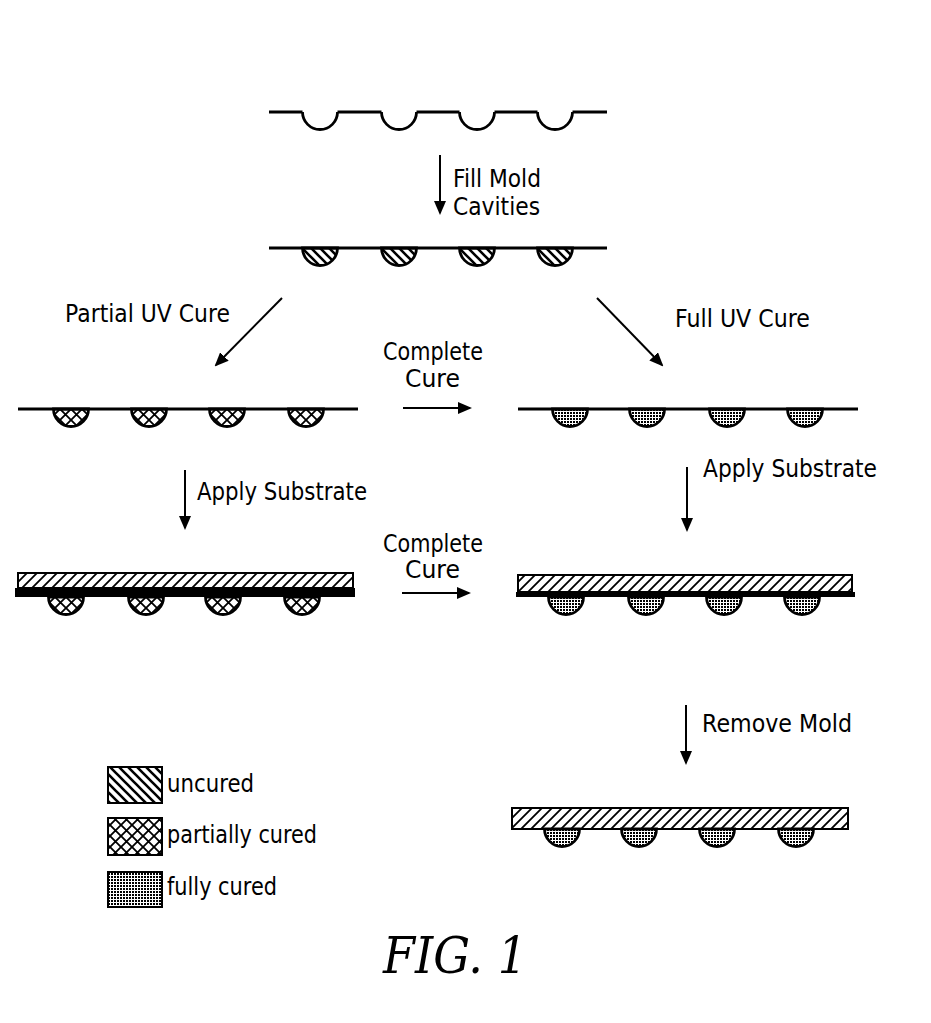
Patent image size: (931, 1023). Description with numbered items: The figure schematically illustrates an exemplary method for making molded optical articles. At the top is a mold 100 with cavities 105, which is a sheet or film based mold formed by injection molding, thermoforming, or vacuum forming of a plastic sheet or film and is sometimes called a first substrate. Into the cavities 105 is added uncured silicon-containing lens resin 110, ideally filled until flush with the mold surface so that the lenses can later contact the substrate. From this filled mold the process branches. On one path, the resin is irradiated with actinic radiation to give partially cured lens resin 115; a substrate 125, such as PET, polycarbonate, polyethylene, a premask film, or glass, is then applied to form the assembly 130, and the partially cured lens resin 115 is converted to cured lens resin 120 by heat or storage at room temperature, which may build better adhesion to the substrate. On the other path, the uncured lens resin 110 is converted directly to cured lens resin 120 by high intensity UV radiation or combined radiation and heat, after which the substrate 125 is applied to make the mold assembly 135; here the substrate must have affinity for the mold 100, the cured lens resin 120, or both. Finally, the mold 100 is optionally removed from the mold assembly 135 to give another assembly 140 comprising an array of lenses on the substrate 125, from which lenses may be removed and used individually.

The mold 100 is at (461, 85).
The cavities 105 is at (324, 118).
The uncured silicon-containing lens resin 110 is at (323, 252).
The partially cured lens resin 115 is at (69, 411).
The cured lens resin 120 is at (731, 411).
The substrate 125 is at (276, 573).
The assembly 130 is at (70, 534).
The mold assembly 135 is at (838, 541).
The assembly comprising an array of lenses on the substrate 140 is at (494, 797).